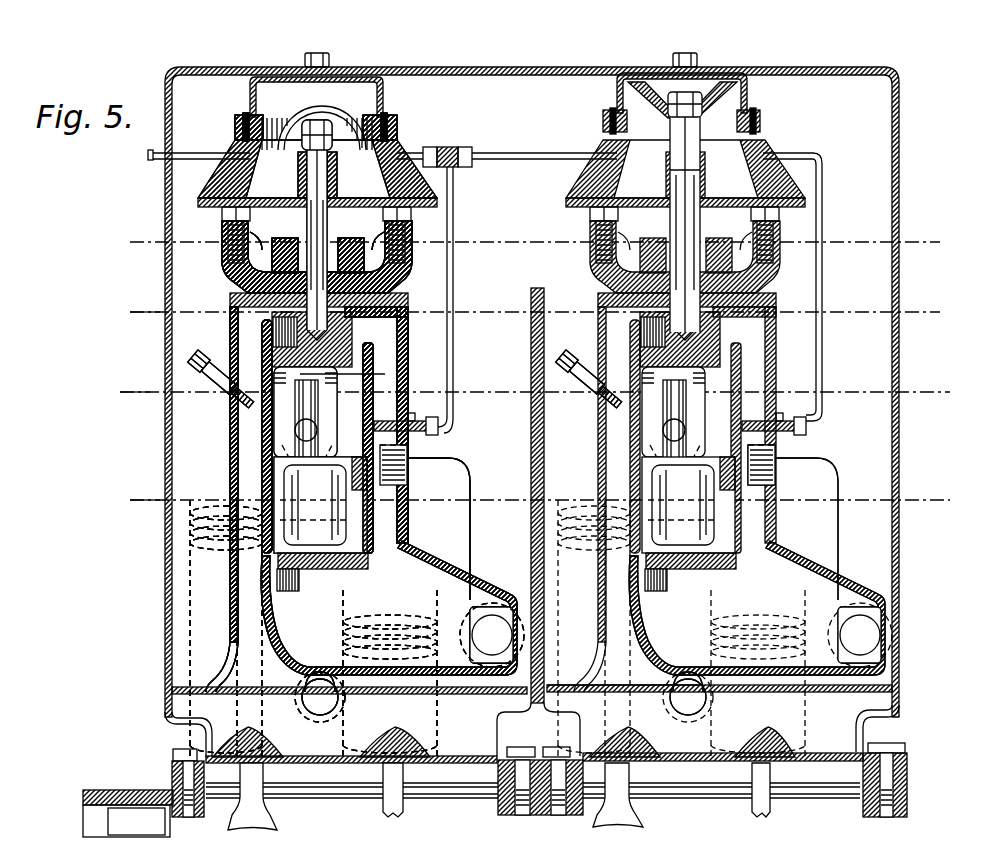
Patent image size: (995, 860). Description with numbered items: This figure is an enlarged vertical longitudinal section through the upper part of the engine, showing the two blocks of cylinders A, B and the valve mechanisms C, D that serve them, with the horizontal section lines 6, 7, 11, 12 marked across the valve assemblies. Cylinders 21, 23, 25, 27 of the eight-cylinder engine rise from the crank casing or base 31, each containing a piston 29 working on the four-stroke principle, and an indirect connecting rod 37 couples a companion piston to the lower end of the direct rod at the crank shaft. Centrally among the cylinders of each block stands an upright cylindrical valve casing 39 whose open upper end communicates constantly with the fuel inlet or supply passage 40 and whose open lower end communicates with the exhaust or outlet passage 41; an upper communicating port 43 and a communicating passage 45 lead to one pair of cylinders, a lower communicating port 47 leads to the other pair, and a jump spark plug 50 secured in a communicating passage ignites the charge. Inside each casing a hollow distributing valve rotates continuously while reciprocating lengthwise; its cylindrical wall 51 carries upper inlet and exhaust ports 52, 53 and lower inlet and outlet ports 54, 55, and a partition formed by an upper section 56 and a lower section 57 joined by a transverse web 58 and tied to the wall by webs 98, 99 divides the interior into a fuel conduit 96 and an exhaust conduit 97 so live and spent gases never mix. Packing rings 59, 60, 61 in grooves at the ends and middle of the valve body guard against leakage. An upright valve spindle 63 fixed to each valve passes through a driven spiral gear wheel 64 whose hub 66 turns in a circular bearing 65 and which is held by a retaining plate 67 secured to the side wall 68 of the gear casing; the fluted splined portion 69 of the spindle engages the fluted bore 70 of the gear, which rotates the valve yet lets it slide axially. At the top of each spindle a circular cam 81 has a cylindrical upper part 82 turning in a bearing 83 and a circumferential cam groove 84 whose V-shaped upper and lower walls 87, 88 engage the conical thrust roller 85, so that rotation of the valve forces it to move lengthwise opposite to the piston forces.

The section line 6 is at (540, 390).
The section line 7 is at (541, 497).
The section line 11 is at (534, 202).
The section line 12 is at (534, 310).
The cylinder 21 is at (300, 615).
The cylinder 23 is at (468, 615).
The cylinder 25 is at (620, 700).
The cylinder 27 is at (715, 595).
The piston 29 is at (200, 606).
The crank casing or base 31 is at (170, 795).
The indirect connecting rod 37 is at (390, 805).
The upright cylindrical valve casing 39 is at (232, 420).
The fuel inlet or supply passage 40 is at (453, 300).
The exhaust or outlet passage 41 is at (497, 628).
The upper communicating port 43 is at (385, 420).
The communicating passage 45 is at (262, 445).
The lower communicating port 47 is at (280, 490).
The jump spark plug 50 is at (193, 362).
The cylindrical body or wall of distributing valve 51 is at (409, 328).
The upper inlet port 52 is at (630, 385).
The upper exhaust port 53 is at (268, 380).
The lower inlet port 54 is at (300, 518).
The lower outlet port 55 is at (367, 475).
The upper partition section 56 is at (330, 425).
The lower partition section 57 is at (780, 445).
The transverse web 58 is at (315, 427).
The packing ring 59 is at (262, 345).
The packing ring 60 is at (410, 455).
The packing ring 61 is at (370, 565).
The upright valve shaft or spindle 63 is at (300, 192).
The driven spiral gear wheel 64 is at (240, 262).
The circular bearing 65 is at (270, 270).
The hub of spiral gear wheel 66 is at (400, 243).
The retaining plate 67 is at (222, 216).
The side wall of gear casing 68 is at (248, 248).
The fluted splined portion of spindle 69 is at (330, 200).
The fluted bore of driven gear wheel 70 is at (414, 222).
The circular cam 81 is at (385, 110).
The cylindrical upper part of cam 82 is at (385, 113).
The bearing 83 is at (262, 117).
The circumferential cam groove 84 is at (300, 176).
The thrust roller 85 is at (345, 122).
The upper wall of cam groove 87 is at (317, 120).
The lower wall of cam groove 88 is at (245, 175).
The fuel conduit 96 is at (385, 374).
The exhaust conduit 97 is at (823, 350).
The web 98 is at (245, 300).
The web 99 is at (300, 590).
The cylinder block A is at (465, 427).
The cylinder block B is at (852, 437).
The valve mechanism C is at (395, 358).
The valve mechanism D is at (853, 320).